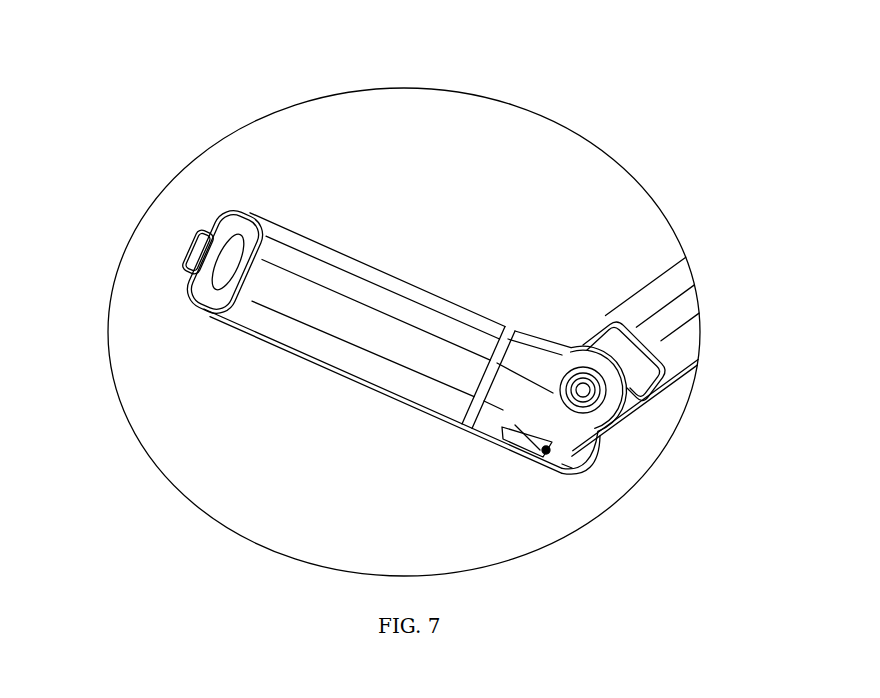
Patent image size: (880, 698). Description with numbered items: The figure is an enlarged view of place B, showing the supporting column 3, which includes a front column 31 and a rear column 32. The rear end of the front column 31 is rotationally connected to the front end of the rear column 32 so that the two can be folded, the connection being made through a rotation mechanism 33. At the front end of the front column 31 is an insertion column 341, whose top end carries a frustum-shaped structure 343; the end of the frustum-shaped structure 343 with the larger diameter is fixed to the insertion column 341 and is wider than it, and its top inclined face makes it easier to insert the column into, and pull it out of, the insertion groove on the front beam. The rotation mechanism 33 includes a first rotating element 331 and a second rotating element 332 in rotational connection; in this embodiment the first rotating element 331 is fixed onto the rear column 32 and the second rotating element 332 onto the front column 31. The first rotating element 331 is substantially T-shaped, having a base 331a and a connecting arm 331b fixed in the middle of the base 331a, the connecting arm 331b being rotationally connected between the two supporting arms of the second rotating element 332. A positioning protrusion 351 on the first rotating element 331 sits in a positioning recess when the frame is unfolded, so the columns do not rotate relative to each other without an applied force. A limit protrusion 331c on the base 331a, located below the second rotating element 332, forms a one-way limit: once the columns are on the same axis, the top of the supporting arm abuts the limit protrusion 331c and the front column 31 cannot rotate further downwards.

The supporting column 3 is at (504, 170).
The front column 31 is at (309, 291).
The rear column 32 is at (663, 287).
The rotation mechanism 33 is at (572, 419).
The first rotating element 331 is at (620, 417).
The base 331a is at (613, 343).
The connecting arm 331b is at (566, 458).
The limit protrusion 331c is at (635, 416).
The second rotating element 332 is at (481, 420).
The insertion column 341 is at (212, 232).
The frustum-shaped structure 343 is at (183, 260).
The positioning protrusion 351 is at (541, 464).
The place B is at (188, 505).